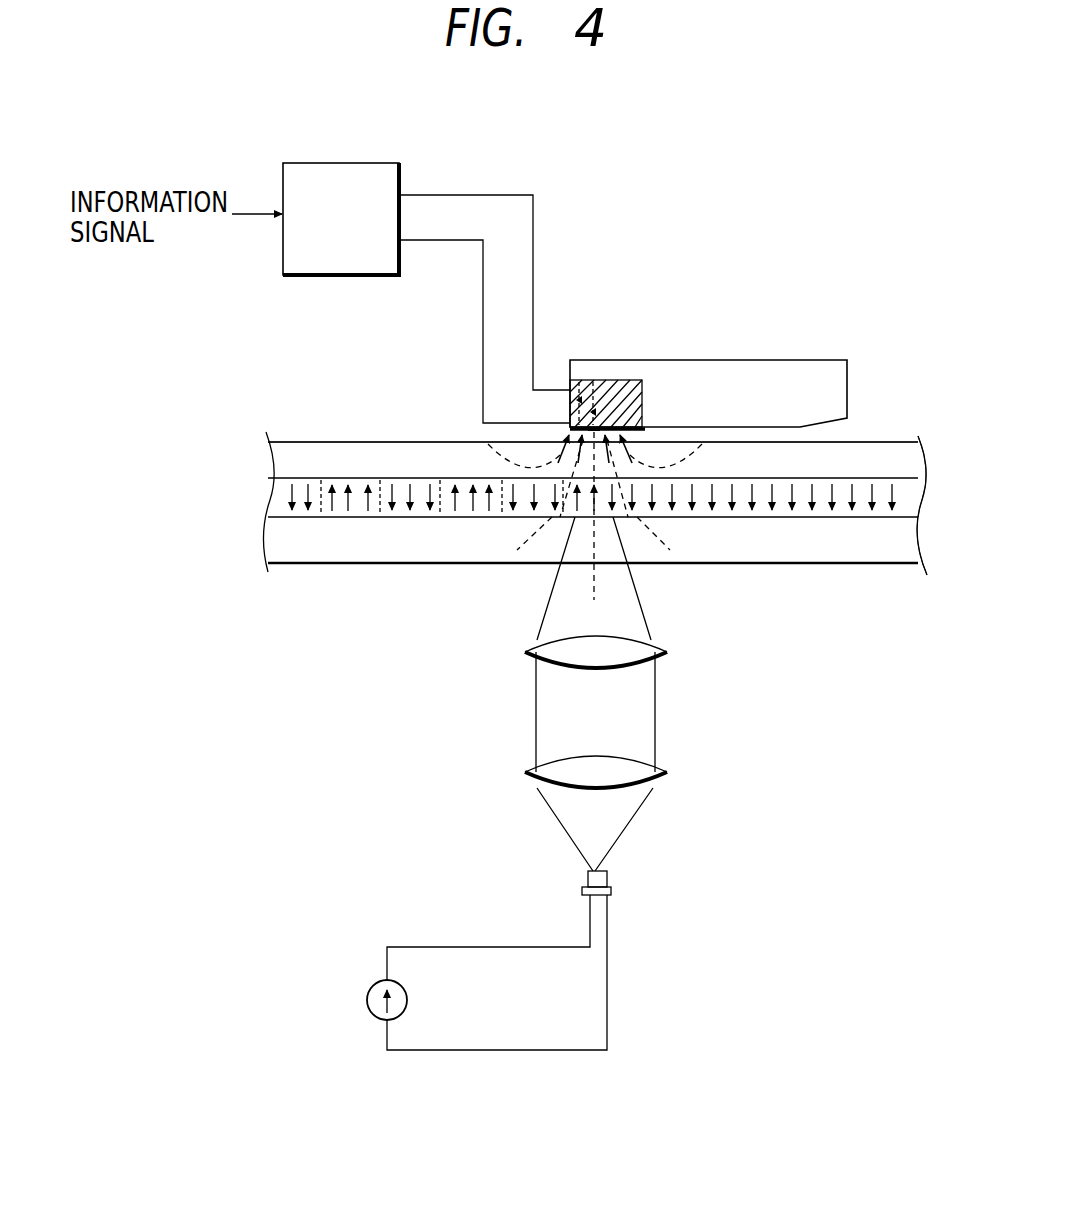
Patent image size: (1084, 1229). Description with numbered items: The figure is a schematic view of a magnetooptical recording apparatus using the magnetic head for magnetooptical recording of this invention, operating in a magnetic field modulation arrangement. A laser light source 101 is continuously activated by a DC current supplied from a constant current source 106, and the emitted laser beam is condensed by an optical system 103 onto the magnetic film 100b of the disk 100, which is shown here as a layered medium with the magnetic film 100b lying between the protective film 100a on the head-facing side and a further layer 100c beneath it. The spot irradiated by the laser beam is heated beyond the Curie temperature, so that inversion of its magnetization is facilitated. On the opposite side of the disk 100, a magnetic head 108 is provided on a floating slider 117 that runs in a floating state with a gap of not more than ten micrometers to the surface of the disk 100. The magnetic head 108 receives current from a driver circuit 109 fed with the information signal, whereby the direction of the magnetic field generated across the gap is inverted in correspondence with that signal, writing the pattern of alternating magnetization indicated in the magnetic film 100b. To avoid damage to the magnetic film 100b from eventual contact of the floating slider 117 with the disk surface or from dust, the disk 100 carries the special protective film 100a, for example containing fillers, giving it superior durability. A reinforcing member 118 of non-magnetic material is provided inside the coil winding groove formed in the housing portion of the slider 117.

The disk 100 is at (242, 432).
The protective film 100a is at (315, 452).
The magnetic film 100b is at (913, 487).
The substrate 100c is at (303, 553).
The laser light source 101 is at (612, 891).
The optical system 103 is at (637, 657).
The constant current source 106 is at (367, 999).
The magnetic head 108 is at (611, 378).
The driver circuit 109 is at (377, 163).
The floating slider 117 is at (752, 368).
The reinforcing member 118 is at (626, 382).